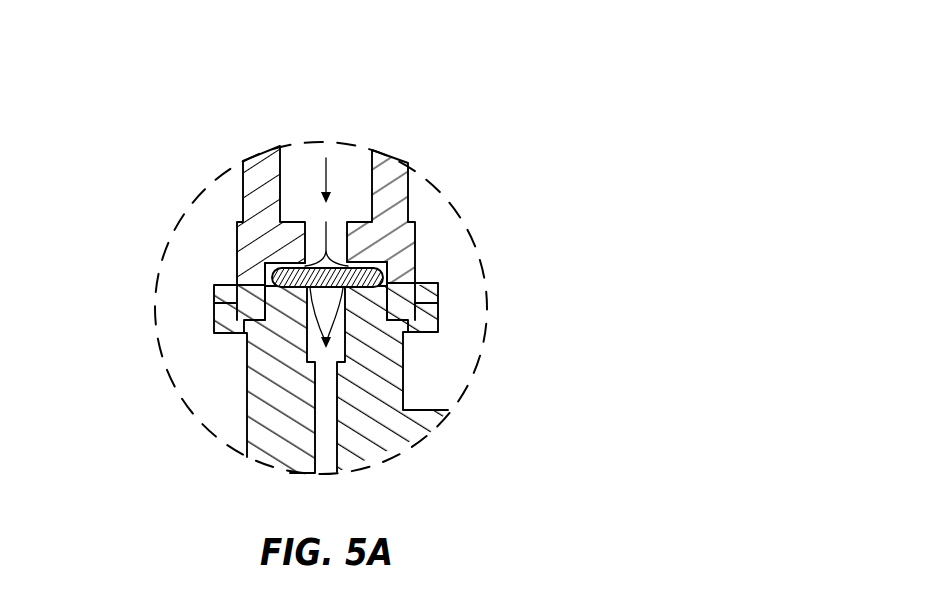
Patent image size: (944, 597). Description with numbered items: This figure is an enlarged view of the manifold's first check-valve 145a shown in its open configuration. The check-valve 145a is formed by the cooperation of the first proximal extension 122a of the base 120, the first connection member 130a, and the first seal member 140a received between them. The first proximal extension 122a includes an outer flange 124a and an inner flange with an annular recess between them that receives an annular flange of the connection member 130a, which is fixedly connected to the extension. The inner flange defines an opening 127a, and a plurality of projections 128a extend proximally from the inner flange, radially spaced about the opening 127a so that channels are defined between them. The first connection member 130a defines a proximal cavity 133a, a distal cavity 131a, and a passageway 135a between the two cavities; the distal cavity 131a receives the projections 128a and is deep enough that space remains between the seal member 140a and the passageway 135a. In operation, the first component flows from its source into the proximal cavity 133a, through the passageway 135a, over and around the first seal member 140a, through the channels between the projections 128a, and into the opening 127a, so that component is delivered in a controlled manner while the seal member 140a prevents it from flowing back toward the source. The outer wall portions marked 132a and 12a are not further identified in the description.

The body 12a is at (406, 335).
The base 120 is at (215, 412).
The first proximal extension 122a is at (245, 380).
The outer flange 124a is at (437, 312).
The opening 127a is at (307, 330).
The projections 128a is at (437, 282).
The first connection member 130a is at (308, 173).
The distal cavity 131a is at (307, 287).
The right wall 132a is at (392, 186).
The proximal cavity 133a is at (282, 176).
The passageway 135a is at (306, 240).
The first seal member 140a is at (412, 257).
The first check-valve 145a is at (466, 257).